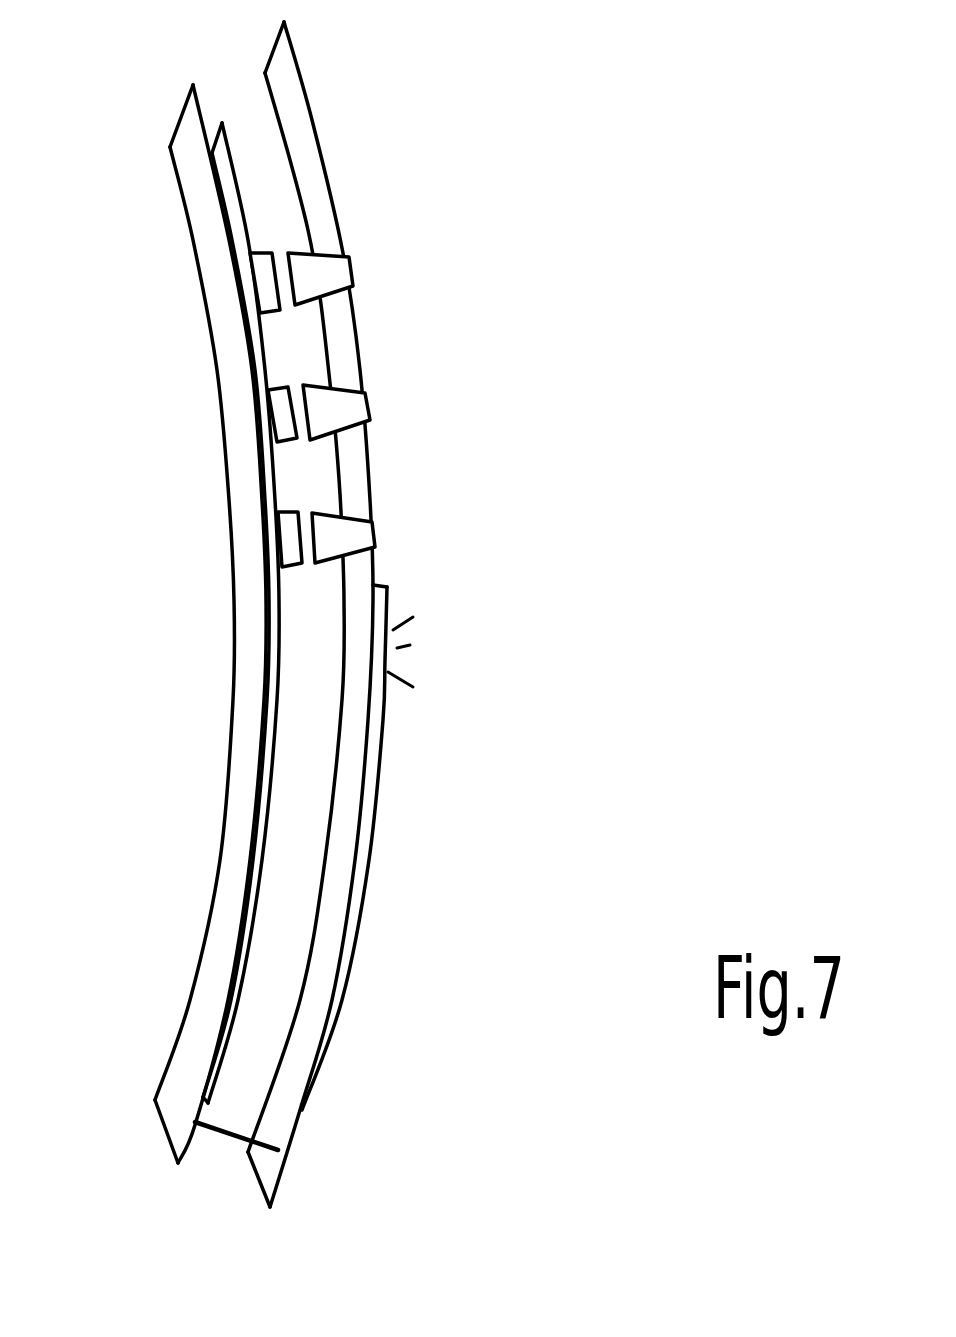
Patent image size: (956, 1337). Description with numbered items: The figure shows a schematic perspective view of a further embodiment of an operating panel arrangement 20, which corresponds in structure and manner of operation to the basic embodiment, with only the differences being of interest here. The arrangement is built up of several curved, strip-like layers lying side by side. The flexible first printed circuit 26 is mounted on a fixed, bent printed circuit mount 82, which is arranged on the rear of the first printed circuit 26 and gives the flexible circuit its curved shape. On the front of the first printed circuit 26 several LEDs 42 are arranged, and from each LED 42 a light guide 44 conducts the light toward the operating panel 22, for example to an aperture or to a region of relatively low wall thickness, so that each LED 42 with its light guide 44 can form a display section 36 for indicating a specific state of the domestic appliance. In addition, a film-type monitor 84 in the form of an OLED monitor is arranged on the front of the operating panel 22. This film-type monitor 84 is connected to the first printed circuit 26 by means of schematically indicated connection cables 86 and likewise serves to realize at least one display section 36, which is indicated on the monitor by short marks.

The operating panel arrangement 20 is at (593, 417).
The operating panel 22 is at (320, 188).
The first printed circuit 26 is at (222, 162).
The display section 36 is at (420, 642).
The LED 42 is at (263, 282).
The light guide 44 is at (322, 275).
The printed circuit mount 82 is at (210, 183).
The film-type monitor 84 is at (337, 1003).
The connection cables 86 is at (228, 1133).